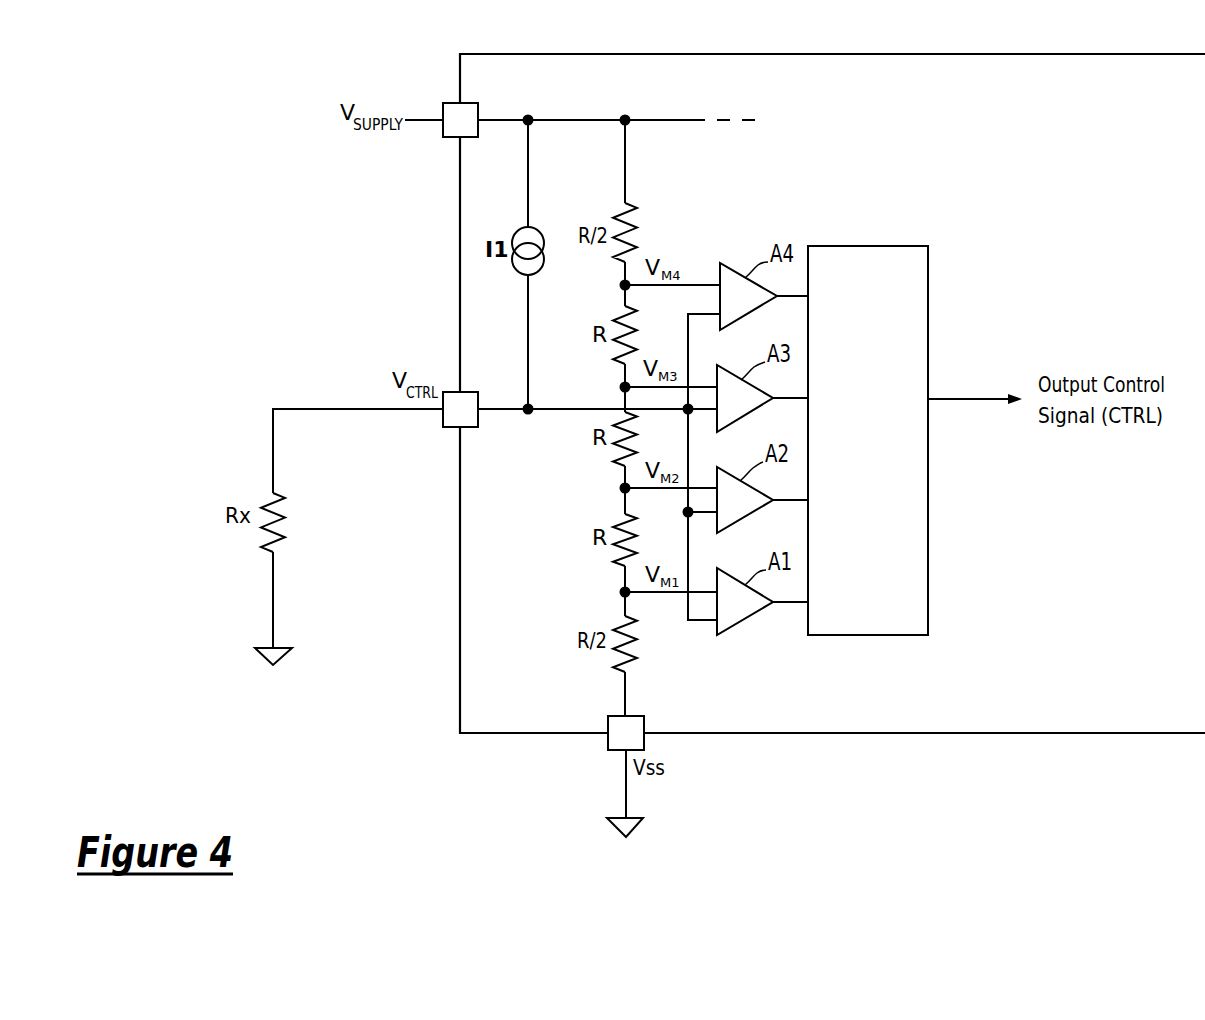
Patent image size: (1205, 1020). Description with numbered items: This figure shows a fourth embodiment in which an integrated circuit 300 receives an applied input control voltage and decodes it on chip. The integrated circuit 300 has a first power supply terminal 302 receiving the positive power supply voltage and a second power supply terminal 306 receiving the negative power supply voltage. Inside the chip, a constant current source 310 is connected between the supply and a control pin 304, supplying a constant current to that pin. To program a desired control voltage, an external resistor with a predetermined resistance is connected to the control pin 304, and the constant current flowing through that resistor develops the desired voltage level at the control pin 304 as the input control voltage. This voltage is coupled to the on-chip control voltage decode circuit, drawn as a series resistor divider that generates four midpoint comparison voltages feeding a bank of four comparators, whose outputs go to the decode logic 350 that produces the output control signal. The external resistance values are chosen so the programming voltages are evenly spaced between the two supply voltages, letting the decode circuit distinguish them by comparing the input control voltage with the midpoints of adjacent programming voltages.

The integrated circuit 300 is at (1063, 54).
The first power supply terminal 302 is at (443, 137).
The control pin 304 is at (443, 427).
The second power supply terminal 306 is at (608, 750).
The constant current source 310 is at (533, 228).
The decode logic 350 is at (892, 487).